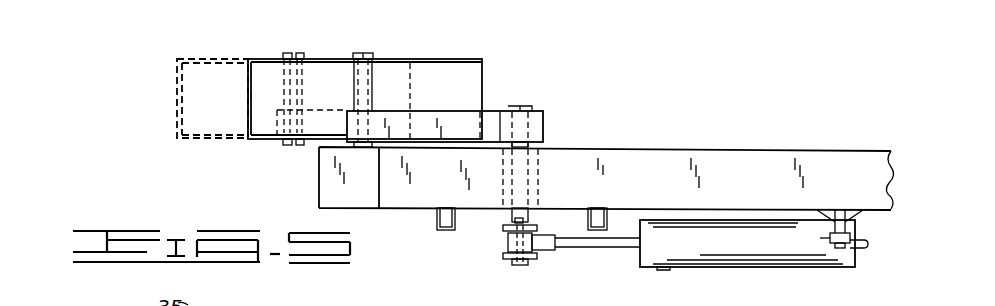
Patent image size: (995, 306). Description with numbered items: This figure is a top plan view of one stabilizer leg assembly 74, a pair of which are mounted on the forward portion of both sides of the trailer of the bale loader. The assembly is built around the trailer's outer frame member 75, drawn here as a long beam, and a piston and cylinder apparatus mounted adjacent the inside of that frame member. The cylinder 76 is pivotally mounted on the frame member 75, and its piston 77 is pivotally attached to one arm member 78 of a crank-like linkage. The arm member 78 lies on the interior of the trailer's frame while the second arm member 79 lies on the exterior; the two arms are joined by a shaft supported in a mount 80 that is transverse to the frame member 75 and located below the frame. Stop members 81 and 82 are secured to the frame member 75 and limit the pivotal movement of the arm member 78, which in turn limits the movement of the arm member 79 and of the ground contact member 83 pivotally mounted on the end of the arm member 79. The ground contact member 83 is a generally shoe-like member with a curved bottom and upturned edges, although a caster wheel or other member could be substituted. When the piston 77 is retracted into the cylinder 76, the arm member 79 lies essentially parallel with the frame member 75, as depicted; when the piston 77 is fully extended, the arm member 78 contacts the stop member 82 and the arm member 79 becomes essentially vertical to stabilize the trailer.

The stabilizer leg assembly 74 is at (655, 108).
The frame member 75 is at (695, 157).
The cylinder 76 is at (735, 247).
The piston 77 is at (610, 247).
The arm member 78 is at (505, 263).
The arm member 79 is at (463, 132).
The mount 80 is at (537, 180).
The stop member 81 is at (602, 217).
The stop member 82 is at (445, 222).
The ground contact member 83 is at (390, 60).